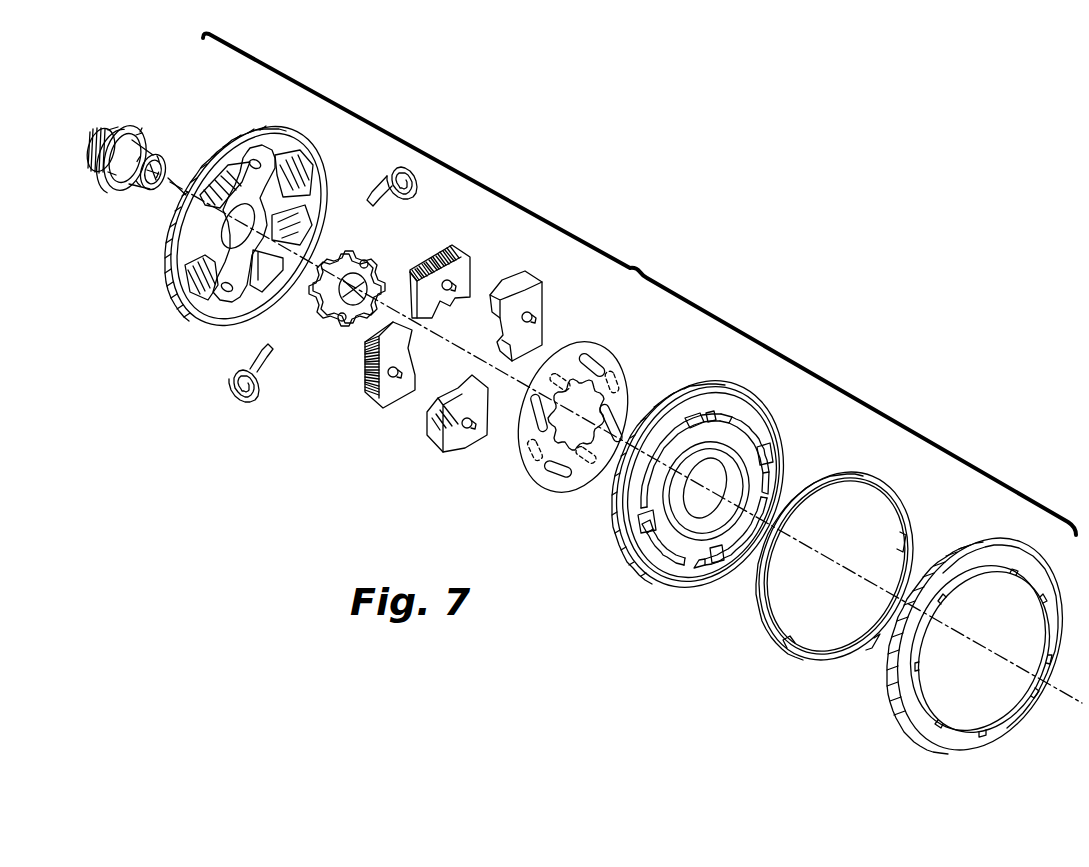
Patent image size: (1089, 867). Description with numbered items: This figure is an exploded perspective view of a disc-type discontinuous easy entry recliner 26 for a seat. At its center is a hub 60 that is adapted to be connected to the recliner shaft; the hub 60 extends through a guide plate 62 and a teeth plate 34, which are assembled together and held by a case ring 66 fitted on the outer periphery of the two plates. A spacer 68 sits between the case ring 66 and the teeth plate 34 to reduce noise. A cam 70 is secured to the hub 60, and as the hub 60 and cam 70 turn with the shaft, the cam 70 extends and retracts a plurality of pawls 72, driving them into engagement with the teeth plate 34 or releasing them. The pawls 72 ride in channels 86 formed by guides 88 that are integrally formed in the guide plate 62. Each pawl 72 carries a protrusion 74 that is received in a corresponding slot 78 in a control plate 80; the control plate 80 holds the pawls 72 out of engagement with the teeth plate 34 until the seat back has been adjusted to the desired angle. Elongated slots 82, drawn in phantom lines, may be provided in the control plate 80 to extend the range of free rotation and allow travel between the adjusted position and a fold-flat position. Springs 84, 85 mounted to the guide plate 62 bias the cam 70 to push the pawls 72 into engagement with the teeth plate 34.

The discontinuous easy entry recliner 26 is at (639, 285).
The teeth plate 34 is at (624, 558).
The hub 60 is at (139, 124).
The guide plate 62 is at (253, 226).
The case ring 66 is at (890, 697).
The spacer 68 is at (772, 632).
The cam 70 is at (368, 250).
The pawls 72 is at (471, 258).
The protrusion 74 is at (534, 322).
The slots 78 is at (611, 428).
The control plate 80 is at (573, 429).
The elongated slots 82 is at (517, 457).
The spring 84 is at (417, 184).
The spring 85 is at (231, 381).
The channels 86 is at (302, 201).
The guides 88 is at (236, 192).